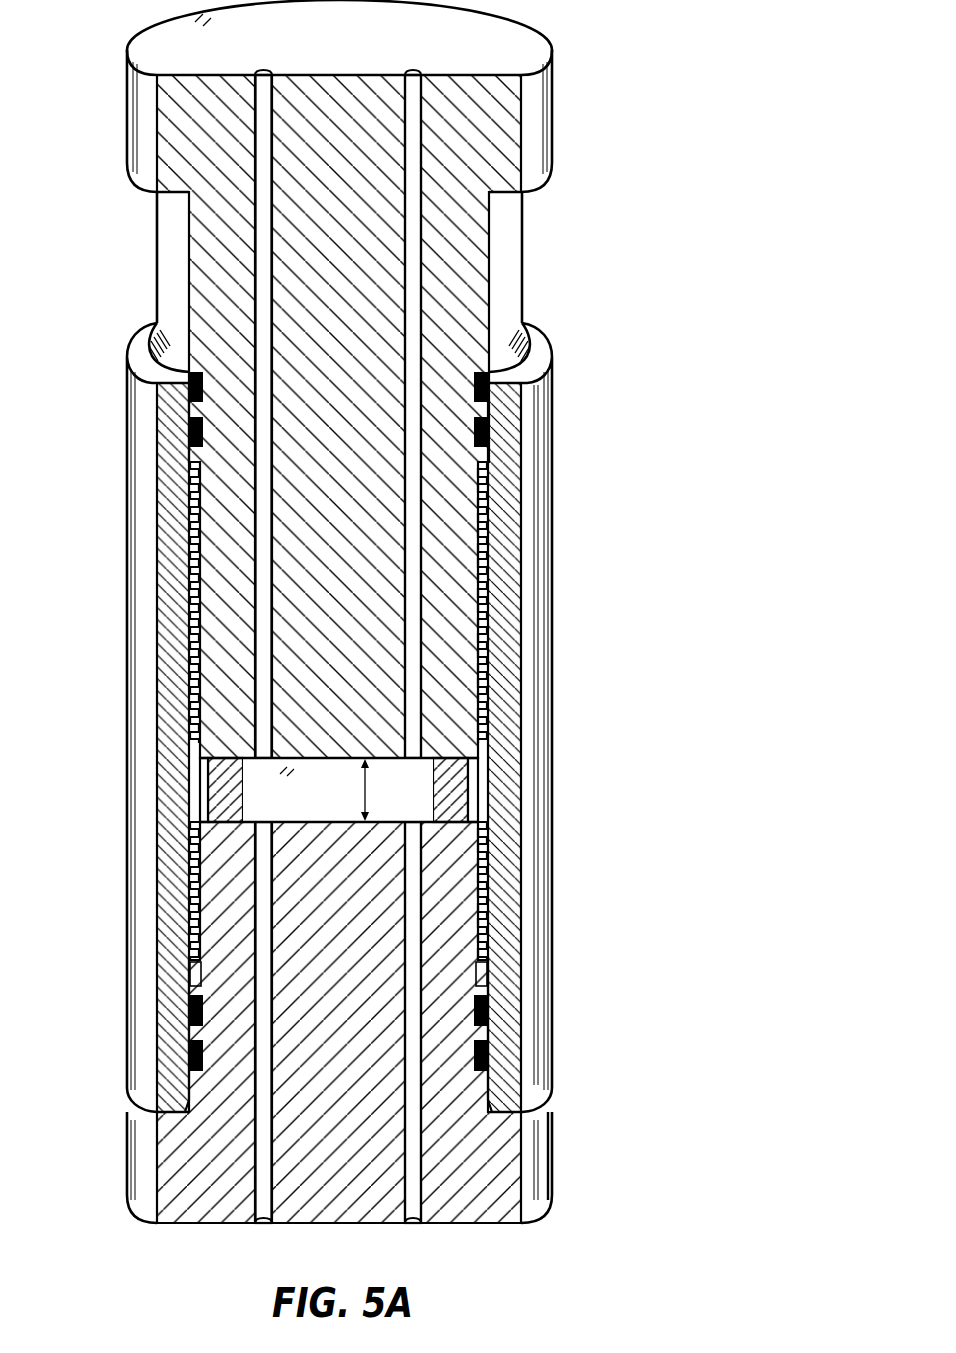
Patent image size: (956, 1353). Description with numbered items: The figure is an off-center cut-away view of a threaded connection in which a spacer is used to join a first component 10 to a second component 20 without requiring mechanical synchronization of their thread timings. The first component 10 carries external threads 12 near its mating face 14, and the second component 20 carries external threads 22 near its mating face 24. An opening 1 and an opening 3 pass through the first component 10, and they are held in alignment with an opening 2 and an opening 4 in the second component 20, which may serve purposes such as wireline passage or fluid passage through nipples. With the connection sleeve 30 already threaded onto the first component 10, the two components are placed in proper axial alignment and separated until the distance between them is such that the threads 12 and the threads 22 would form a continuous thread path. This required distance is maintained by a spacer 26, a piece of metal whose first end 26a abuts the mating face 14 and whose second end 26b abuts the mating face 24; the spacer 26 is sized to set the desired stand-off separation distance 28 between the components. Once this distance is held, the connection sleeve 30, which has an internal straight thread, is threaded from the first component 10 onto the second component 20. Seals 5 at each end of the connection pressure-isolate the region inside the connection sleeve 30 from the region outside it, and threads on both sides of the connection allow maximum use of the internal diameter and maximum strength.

The first component 10 is at (531, 31).
The opening 1 is at (415, 250).
The opening 3 is at (262, 253).
The opening 2 is at (418, 1172).
The opening 4 is at (267, 1174).
The seals 5 is at (190, 425).
The threads 12 is at (192, 540).
The connection sleeve 30 is at (540, 598).
The stand-off separation distance 28 is at (366, 782).
The mating face 14 is at (480, 762).
The spacer 26 is at (215, 797).
The first end 26a is at (213, 753).
The second end 26b is at (225, 826).
The mating face 24 is at (207, 818).
The threads 22 is at (195, 905).
The second component 20 is at (510, 1190).